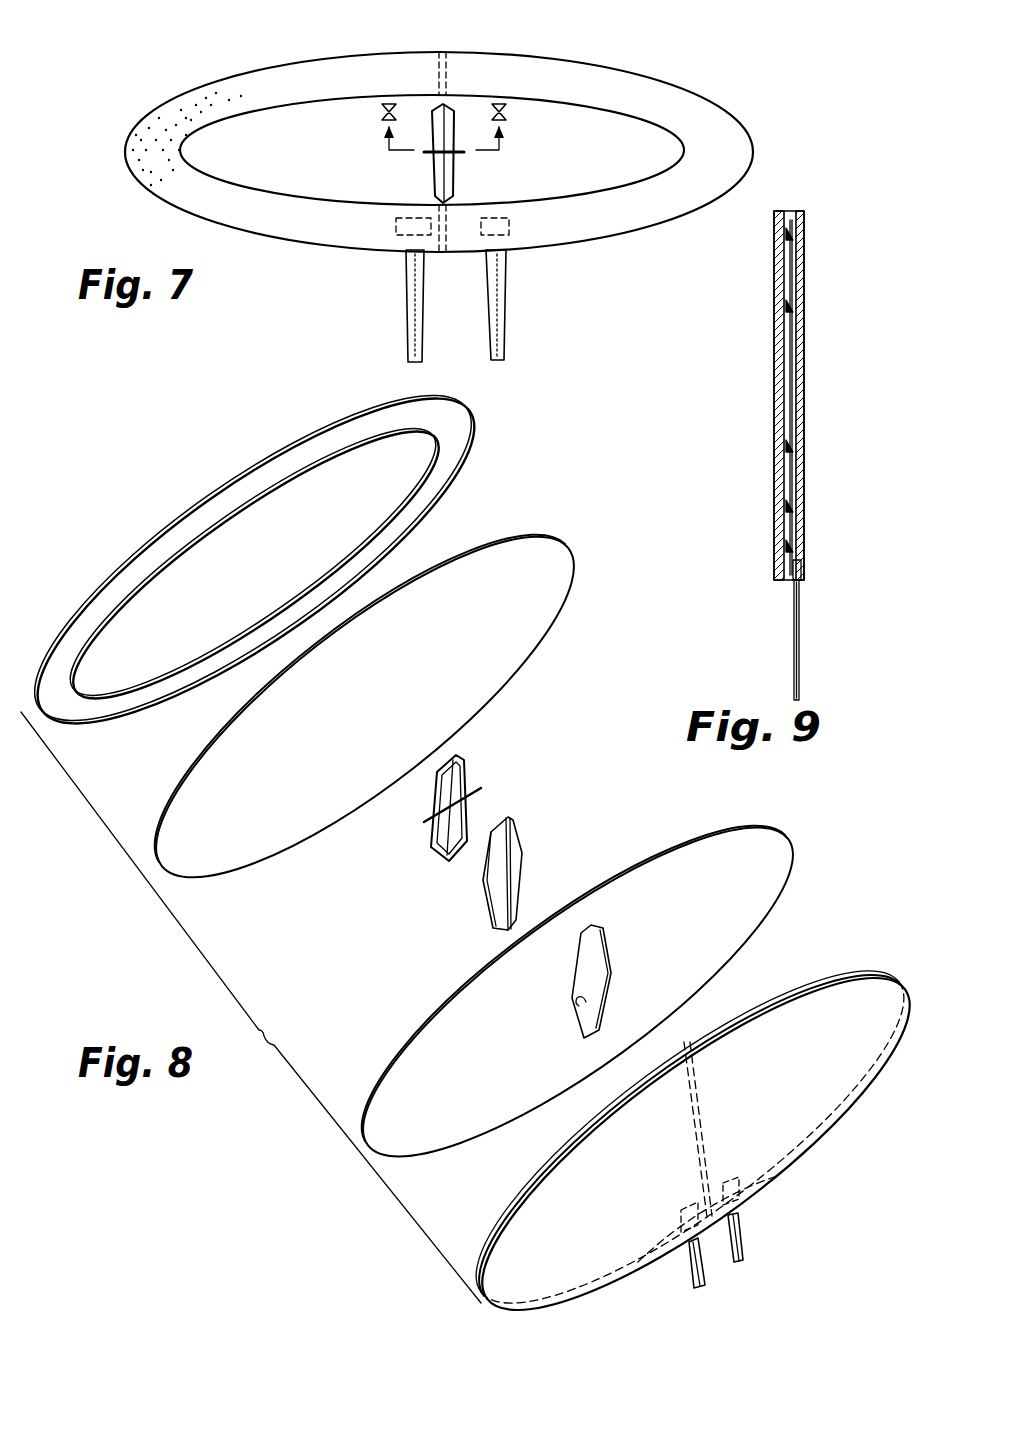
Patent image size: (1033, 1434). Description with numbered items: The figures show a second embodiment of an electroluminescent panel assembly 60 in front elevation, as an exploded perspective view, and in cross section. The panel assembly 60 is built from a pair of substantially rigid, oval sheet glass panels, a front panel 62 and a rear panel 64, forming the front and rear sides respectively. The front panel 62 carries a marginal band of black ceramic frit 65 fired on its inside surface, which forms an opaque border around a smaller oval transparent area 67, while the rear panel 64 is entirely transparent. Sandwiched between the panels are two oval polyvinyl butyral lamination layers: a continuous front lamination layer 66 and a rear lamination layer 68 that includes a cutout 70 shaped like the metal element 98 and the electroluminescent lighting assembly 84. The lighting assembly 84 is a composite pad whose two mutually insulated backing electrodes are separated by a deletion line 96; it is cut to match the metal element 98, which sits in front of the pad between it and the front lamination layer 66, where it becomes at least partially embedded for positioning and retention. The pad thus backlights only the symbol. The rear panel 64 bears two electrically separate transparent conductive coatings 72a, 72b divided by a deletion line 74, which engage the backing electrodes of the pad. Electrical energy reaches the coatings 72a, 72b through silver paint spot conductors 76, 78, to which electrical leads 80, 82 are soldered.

In FIG. 7, the panel assembly 60 is at (674, 80).
In FIG. 8, the panel assembly 60 is at (182, 496).
In FIG. 9, the panel assembly 60 is at (795, 207).
In FIG. 8, the front panel 62 is at (382, 410).
In FIG. 9, the front panel 62 is at (773, 292).
In FIG. 8, the rear panel 64 is at (863, 1073).
In FIG. 9, the rear panel 64 is at (803, 268).
In FIG. 7, the marginal band of black ceramic frit 65 is at (203, 90).
In FIG. 8, the marginal band of black ceramic frit 65 is at (456, 426).
In FIG. 8, the front lamination layer 66 is at (472, 573).
In FIG. 9, the front lamination layer 66 is at (788, 463).
In FIG. 7, the transparent area 67 is at (223, 148).
In FIG. 8, the transparent area 67 is at (128, 637).
In FIG. 8, the rear lamination layer 68 is at (397, 1082).
In FIG. 9, the rear lamination layer 68 is at (748, 507).
In FIG. 8, the cutout 70 is at (585, 1002).
In FIG. 8, the transparent electrically conductive coating 72a is at (478, 1242).
In FIG. 8, the transparent electrically conductive coating 72b is at (788, 992).
In FIG. 7, the deletion line 74 is at (447, 77).
In FIG. 8, the deletion line 74 is at (685, 1040).
In FIG. 7, the silver paint spot conductor 76 is at (508, 226).
In FIG. 8, the silver paint spot conductor 76 is at (636, 1260).
In FIG. 9, the silver paint spot conductor 76 is at (803, 555).
In FIG. 7, the silver paint spot conductor 78 is at (410, 230).
In FIG. 8, the silver paint spot conductor 78 is at (773, 1178).
In FIG. 7, the electrical lead 80 is at (505, 308).
In FIG. 8, the electrical lead 80 is at (688, 1262).
In FIG. 9, the electrical lead 80 is at (799, 633).
In FIG. 7, the electrical lead 82 is at (405, 308).
In FIG. 8, the electrical lead 82 is at (740, 1235).
In FIG. 8, the electroluminescent lighting assembly 84 is at (520, 868).
In FIG. 9, the electroluminescent lighting assembly 84 is at (741, 397).
In FIG. 8, the deletion line 96 is at (490, 895).
In FIG. 7, the metal element 98 is at (427, 128).
In FIG. 8, the metal element 98 is at (468, 777).
In FIG. 9, the metal element 98 is at (788, 353).